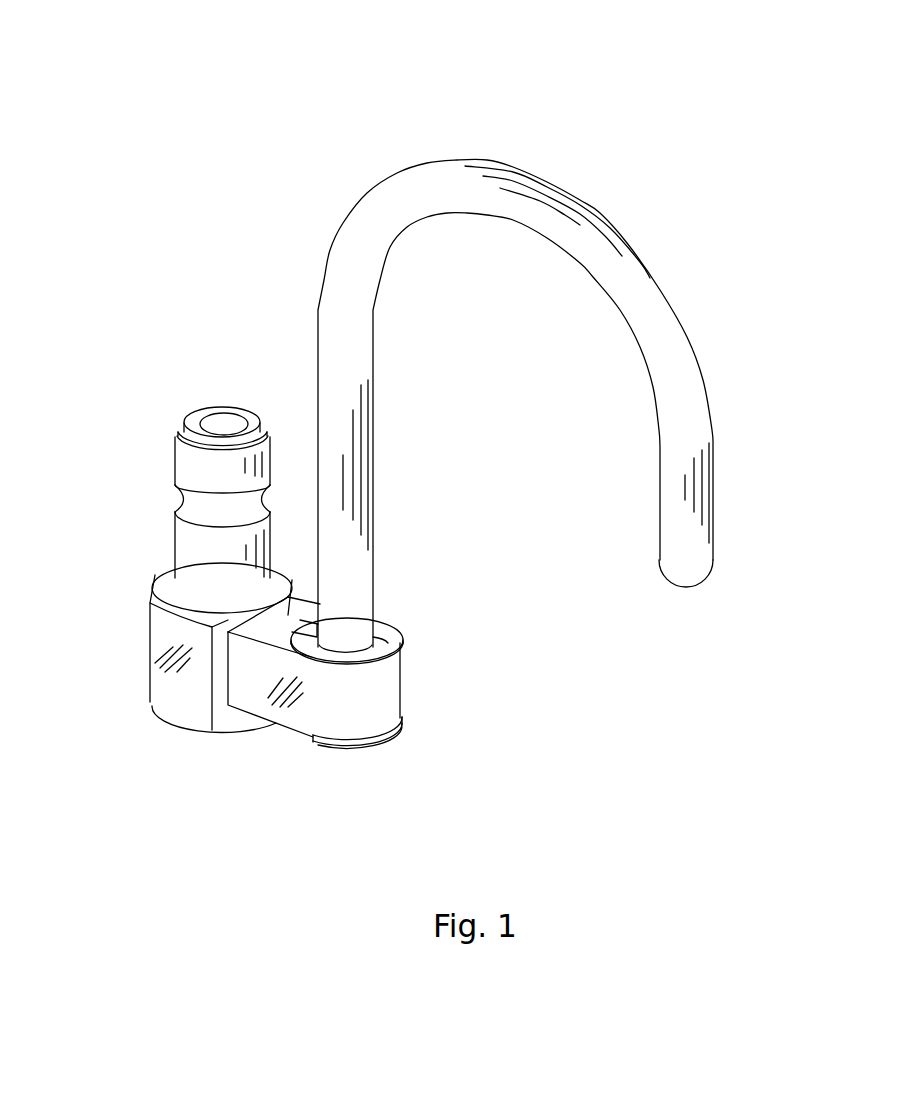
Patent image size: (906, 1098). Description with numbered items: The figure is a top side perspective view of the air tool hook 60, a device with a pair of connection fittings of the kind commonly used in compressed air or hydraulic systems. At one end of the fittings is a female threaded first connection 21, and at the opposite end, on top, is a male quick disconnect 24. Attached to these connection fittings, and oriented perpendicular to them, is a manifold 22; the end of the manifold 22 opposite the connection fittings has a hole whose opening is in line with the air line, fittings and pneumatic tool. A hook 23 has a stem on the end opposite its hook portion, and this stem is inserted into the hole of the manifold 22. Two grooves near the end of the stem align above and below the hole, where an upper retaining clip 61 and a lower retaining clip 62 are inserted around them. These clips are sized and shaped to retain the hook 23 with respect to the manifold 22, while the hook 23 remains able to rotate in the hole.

The air tool hook 60 is at (243, 86).
The hook 23 is at (617, 227).
The male quick disconnect 24 is at (185, 425).
The female threaded first connection 21 is at (150, 691).
The manifold 22 is at (401, 678).
The upper retaining clip 61 is at (392, 622).
The lower retaining clip 62 is at (392, 745).